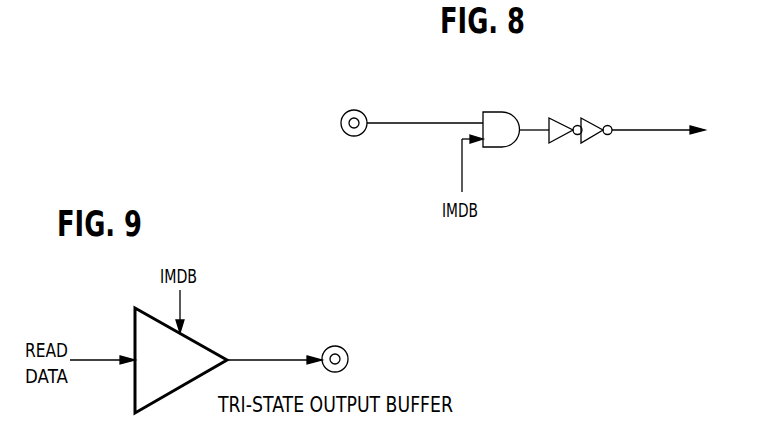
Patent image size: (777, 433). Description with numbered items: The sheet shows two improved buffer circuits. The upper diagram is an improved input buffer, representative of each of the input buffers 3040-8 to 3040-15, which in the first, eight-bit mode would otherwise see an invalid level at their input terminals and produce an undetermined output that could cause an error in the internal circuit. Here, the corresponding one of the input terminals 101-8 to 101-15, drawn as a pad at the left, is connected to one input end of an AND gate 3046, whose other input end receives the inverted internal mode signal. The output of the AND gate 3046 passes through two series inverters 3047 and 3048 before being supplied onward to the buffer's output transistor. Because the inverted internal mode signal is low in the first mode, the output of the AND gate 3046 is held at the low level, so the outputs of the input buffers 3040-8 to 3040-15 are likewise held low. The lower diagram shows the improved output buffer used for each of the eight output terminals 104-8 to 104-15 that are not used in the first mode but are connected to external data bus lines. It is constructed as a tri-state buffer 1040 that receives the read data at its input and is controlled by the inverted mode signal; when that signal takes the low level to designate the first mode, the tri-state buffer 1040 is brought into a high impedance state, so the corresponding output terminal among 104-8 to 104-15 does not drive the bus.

In FIG. 8, the input terminal 101-8 is at (342, 134).
In FIG. 8, the input terminal 101-15 is at (292, 145).
In FIG. 8, the AND gate 3046 is at (503, 117).
In FIG. 8, the inverter 3047 is at (555, 118).
In FIG. 8, the inverter 3048 is at (590, 118).
In FIG. 8, the input buffer 3040-8 is at (568, 190).
In FIG. 8, the input buffer 3040-15 is at (606, 182).
In FIG. 9, the tri-state buffer 1040 is at (196, 343).
In FIG. 9, the output terminal 104-8 is at (338, 346).
In FIG. 9, the output terminal 104-15 is at (398, 328).